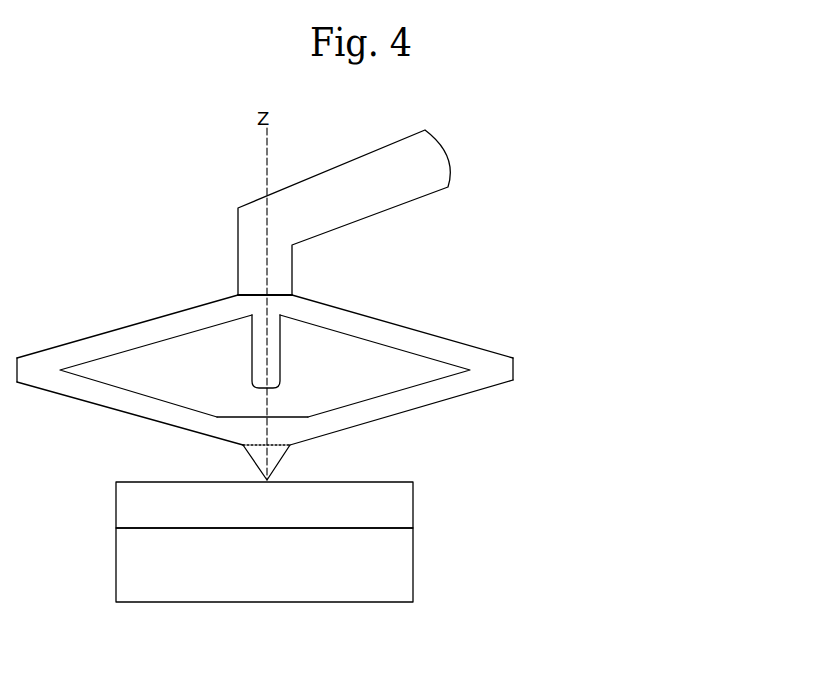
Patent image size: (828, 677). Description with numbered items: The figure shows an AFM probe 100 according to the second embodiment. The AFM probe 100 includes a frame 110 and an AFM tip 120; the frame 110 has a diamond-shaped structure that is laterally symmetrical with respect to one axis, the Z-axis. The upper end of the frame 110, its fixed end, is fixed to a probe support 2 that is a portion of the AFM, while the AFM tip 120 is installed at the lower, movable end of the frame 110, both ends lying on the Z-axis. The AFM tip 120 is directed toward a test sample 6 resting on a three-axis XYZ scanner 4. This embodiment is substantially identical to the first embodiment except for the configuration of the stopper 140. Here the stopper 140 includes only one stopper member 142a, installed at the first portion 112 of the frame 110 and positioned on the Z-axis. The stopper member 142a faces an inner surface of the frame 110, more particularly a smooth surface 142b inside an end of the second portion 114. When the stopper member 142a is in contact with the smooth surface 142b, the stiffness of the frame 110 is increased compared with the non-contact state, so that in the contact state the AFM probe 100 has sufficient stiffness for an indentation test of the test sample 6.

The probe support 2 is at (370, 160).
The XYZ scanner 4 is at (415, 565).
The test sample 6 is at (415, 503).
The AFM probe 100 is at (469, 300).
The frame 110 is at (661, 325).
The first portion 112 is at (487, 348).
The second portion 114 is at (490, 390).
The AFM tip 120 is at (278, 465).
The stopper 140 is at (406, 276).
The stopper member 142a is at (280, 341).
The smooth surface 142b is at (282, 417).